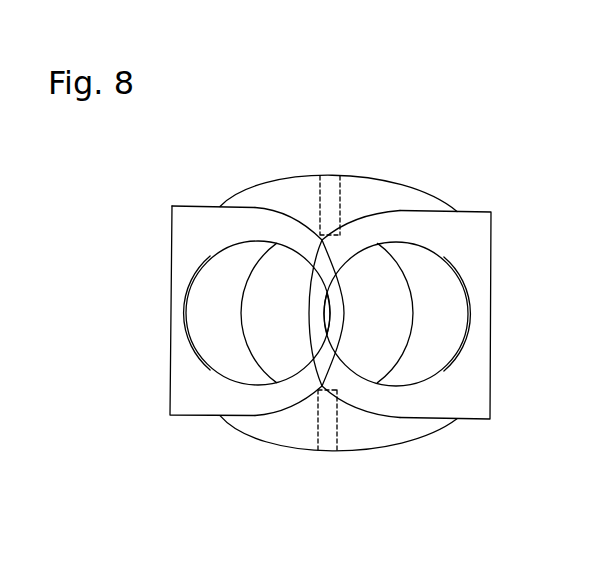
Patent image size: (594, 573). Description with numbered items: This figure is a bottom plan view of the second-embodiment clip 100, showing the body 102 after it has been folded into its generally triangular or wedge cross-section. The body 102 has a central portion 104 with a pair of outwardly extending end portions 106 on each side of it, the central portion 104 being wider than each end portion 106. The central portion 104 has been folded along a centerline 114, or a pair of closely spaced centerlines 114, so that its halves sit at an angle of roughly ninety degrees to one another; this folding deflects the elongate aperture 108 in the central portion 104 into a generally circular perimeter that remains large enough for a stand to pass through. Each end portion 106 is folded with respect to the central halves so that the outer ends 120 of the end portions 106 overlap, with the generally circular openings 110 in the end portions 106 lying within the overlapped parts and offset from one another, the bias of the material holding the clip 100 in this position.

The clip 100 is at (318, 128).
The body 102 is at (269, 181).
The central portion 104 is at (371, 190).
The end portions 106 is at (192, 199).
The elongate aperture 108 is at (393, 328).
The circular opening 110 is at (200, 312).
The centerline 114 is at (318, 457).
The outer ends 120 is at (318, 319).